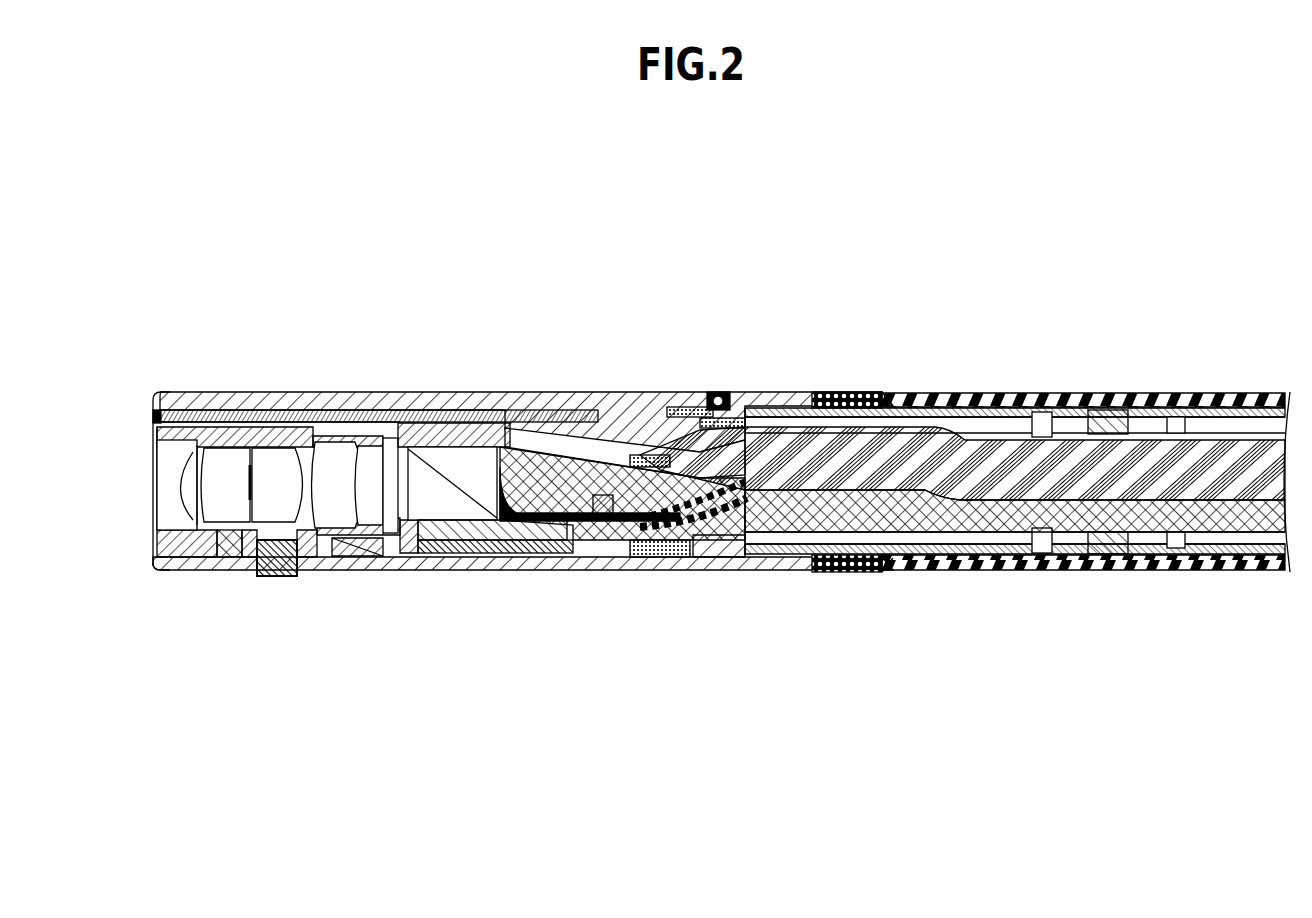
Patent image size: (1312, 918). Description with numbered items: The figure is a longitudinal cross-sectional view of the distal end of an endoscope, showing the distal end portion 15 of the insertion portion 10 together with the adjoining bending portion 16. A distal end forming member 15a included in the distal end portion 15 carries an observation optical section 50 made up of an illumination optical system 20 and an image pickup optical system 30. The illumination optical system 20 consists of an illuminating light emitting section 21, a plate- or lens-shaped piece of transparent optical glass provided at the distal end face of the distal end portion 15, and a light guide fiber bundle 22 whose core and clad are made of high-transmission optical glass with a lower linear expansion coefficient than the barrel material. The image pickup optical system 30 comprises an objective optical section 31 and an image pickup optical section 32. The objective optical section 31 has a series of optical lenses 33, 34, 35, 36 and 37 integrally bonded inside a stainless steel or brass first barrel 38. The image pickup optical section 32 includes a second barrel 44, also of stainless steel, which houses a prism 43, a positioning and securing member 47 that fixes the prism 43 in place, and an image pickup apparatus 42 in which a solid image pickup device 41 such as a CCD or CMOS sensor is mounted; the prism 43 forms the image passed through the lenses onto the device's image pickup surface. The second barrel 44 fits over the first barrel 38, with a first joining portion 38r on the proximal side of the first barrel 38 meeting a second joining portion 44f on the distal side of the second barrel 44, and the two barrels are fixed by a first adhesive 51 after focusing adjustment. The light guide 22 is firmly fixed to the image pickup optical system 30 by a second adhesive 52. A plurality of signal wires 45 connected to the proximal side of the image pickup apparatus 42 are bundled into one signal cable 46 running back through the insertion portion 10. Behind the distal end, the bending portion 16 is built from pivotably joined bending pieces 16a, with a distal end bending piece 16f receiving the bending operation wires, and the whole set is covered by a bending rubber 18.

The insertion portion 10 is at (791, 370).
The distal end portion 15 is at (501, 378).
The distal end forming member 15a is at (637, 394).
The bending portion 16 is at (1044, 372).
The bending piece 16a is at (993, 392).
The distal end bending piece 16f is at (892, 392).
The bending rubber 18 is at (1262, 392).
The illumination optical system 20 is at (212, 342).
The illuminating light emitting section 21 is at (152, 421).
The light guide fiber bundle 22 is at (196, 427).
The image pickup optical system 30 is at (140, 466).
The objective optical section 31 is at (135, 708).
The image pickup optical section 32 is at (400, 708).
The optical lens 33 is at (238, 500).
The optical lens 34 is at (270, 500).
The optical lens 35 is at (335, 500).
The optical lens 36 is at (372, 500).
The optical lens 37 is at (400, 500).
The first barrel 38 is at (183, 500).
The first joining portion 38r is at (378, 444).
The solid image pickup device 41 is at (493, 548).
The image pickup apparatus 42 is at (543, 565).
The prism 43 is at (452, 540).
The second barrel 44 is at (405, 560).
The second joining portion 44f is at (320, 436).
The signal wires 45 is at (682, 545).
The signal cable 46 is at (975, 530).
The positioning and securing member 47 is at (457, 470).
The observation optical section 50 is at (78, 303).
The first adhesive 51 is at (336, 462).
The second adhesive 52 is at (292, 416).